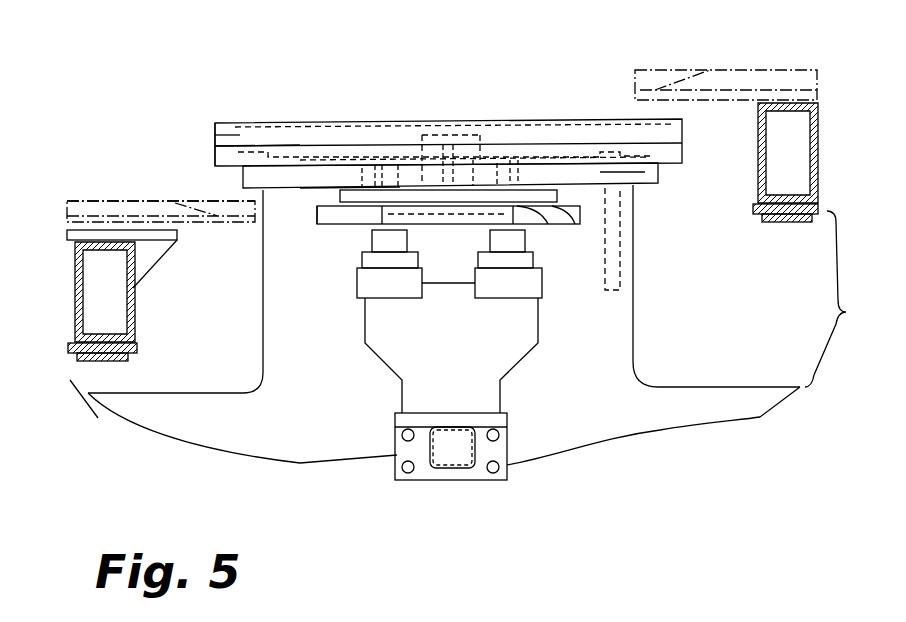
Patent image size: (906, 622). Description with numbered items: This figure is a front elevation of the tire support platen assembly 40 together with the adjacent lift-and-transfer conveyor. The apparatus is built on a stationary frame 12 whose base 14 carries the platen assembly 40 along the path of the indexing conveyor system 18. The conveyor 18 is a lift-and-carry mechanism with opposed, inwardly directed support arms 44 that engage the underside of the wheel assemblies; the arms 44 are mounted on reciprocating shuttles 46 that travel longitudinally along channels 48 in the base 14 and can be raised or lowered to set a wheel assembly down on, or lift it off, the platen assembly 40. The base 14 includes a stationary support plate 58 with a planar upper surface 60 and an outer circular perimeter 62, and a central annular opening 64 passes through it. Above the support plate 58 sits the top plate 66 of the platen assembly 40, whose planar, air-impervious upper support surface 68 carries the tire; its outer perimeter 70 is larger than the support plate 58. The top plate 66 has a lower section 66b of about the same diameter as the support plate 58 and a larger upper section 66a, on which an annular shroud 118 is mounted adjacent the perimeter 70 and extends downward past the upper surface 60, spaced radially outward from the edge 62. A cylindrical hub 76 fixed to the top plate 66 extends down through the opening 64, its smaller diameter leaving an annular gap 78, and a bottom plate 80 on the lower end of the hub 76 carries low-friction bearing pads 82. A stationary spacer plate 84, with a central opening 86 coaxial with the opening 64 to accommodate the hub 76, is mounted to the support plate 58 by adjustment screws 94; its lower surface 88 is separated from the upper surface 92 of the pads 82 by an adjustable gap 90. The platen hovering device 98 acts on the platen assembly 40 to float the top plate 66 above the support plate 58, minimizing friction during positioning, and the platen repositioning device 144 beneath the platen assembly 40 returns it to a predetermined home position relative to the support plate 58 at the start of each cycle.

The stationary frame 12 is at (620, 289).
The base 14 is at (247, 447).
The indexing conveyor system 18 is at (91, 186).
The tire support platen assembly 40 is at (224, 94).
The support arms 44 is at (220, 227).
The reciprocating shuttles 46 is at (135, 323).
The channels 48 is at (263, 370).
The stationary support plate 58 is at (645, 172).
The upper surface 60 is at (683, 134).
The outer circular perimeter 62 is at (660, 170).
The central annular opening 64 is at (497, 163).
The top plate 66 is at (210, 118).
The upper section 66a is at (248, 122).
The lower section 66b is at (262, 147).
The upper support surface 68 is at (418, 167).
The outer circular perimeter 70 is at (215, 138).
The cylindrical hub 76 is at (500, 170).
The annular gap 78 is at (410, 173).
The bottom plate 80 is at (317, 215).
The bearing pads 82 is at (580, 228).
The spacer plate 84 is at (557, 196).
The central opening 86 is at (438, 228).
The lower surface 88 is at (580, 220).
The gap 90 is at (360, 188).
The upper surface 92 is at (535, 205).
The adjustment screws 94 is at (362, 168).
The platen hovering device 98 is at (388, 368).
The annular shroud 118 is at (215, 157).
The platen repositioning device 144 is at (570, 236).